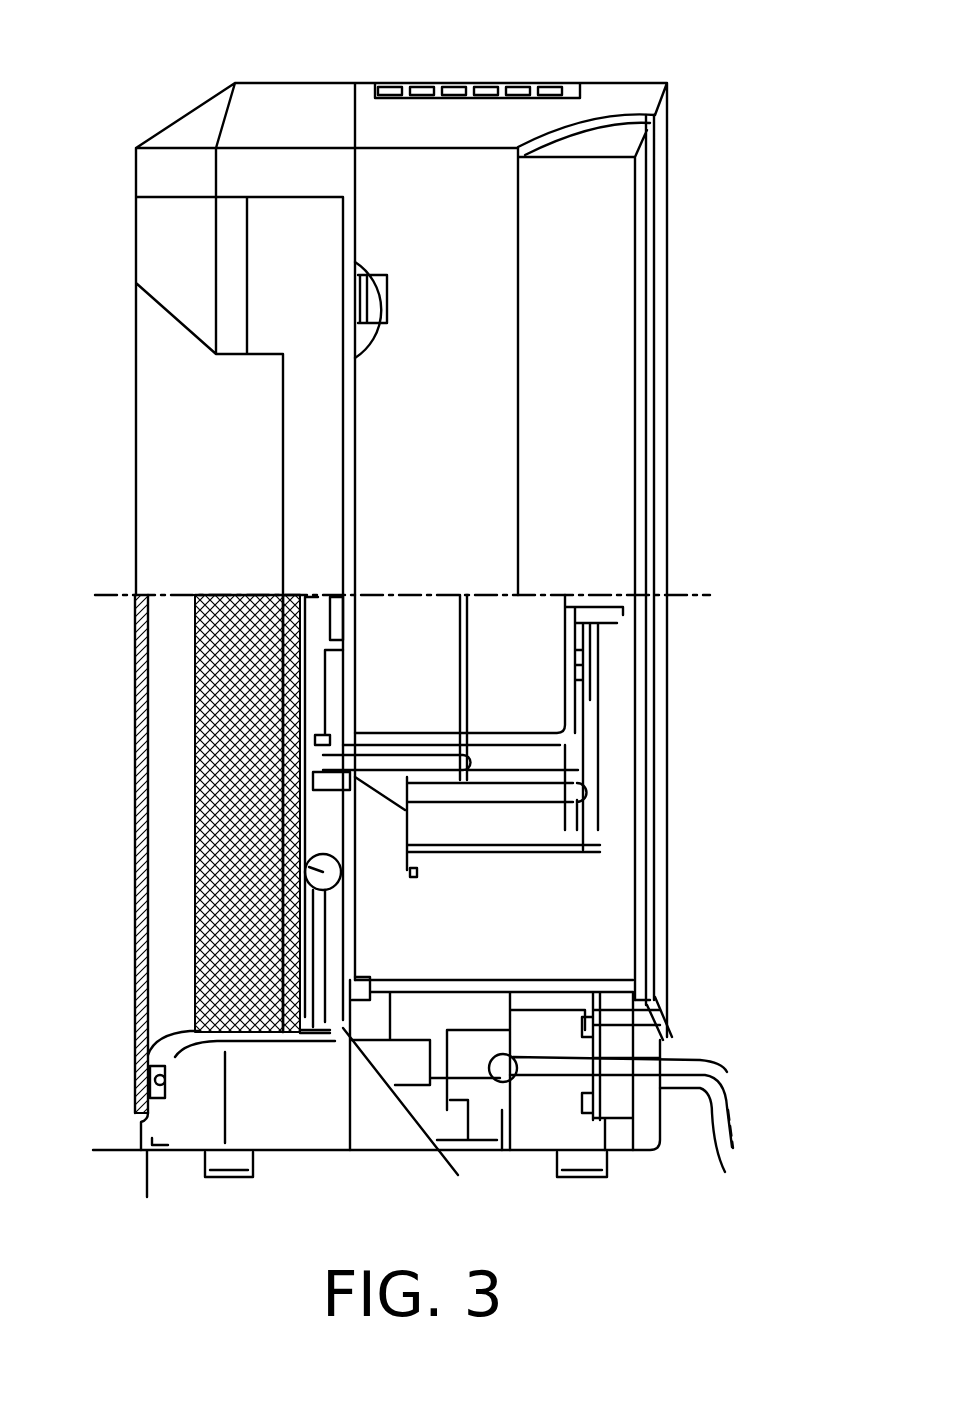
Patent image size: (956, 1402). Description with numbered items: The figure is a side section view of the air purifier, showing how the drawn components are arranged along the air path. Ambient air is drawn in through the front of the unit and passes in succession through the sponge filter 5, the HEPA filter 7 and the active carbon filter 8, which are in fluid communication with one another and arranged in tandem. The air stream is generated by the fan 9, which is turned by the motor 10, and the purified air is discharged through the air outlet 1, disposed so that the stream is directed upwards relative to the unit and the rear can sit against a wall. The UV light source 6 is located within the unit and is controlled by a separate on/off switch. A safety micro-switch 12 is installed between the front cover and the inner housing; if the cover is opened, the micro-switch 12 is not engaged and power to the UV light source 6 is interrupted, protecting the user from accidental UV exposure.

The air outlet 1 is at (415, 82).
The sponge filter 5 is at (138, 1005).
The UV light source 6 is at (305, 870).
The HEPA filter 7 is at (270, 810).
The active carbon filter 8 is at (283, 690).
The fan 9 is at (573, 783).
The motor 10 is at (470, 668).
The micro-switch 12 is at (376, 297).